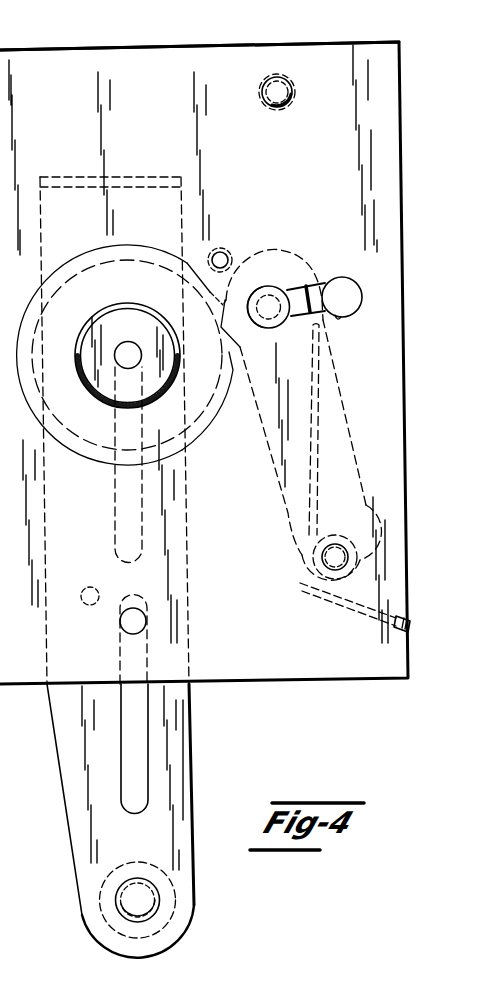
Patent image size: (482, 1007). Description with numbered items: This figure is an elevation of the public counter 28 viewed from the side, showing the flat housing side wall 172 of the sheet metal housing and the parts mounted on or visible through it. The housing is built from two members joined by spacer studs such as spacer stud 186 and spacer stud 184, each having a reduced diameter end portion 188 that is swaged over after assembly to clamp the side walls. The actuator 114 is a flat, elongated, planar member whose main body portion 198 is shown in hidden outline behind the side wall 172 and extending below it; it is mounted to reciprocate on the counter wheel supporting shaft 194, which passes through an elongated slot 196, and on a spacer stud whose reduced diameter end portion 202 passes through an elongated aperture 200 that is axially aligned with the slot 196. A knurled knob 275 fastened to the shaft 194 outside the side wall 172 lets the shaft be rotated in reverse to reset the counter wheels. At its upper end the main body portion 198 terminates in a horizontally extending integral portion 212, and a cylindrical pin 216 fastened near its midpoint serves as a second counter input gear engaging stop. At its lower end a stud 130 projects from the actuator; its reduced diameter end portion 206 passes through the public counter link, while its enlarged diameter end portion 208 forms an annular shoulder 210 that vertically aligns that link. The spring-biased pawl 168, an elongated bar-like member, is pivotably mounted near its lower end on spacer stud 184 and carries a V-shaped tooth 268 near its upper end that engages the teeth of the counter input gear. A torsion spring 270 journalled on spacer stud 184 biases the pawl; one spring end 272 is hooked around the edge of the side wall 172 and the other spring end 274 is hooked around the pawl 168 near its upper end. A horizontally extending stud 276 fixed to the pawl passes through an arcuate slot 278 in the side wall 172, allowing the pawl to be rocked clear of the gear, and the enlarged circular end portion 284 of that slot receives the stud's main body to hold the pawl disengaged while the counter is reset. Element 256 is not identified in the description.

The public counter 28 is at (256, 44).
The housing side wall 172 is at (163, 61).
The reduced diameter end portion 188 is at (268, 97).
The spacer stud 186 is at (275, 105).
The horizontally extending integral portion 212 is at (145, 183).
The hole 256 is at (224, 252).
The V-shaped tooth 268 is at (229, 337).
The knurled knob 275 is at (124, 305).
The counter wheel supporting shaft 194 is at (133, 334).
The elongated slot 196 is at (122, 543).
The cylindrical pin 216 is at (92, 594).
The main body portion 198 is at (190, 603).
The reduced diameter end portion 202 is at (146, 622).
The horizontally extending stud 276 is at (270, 294).
The arcuate slot 278 is at (322, 292).
The enlarged circular end portion 284 is at (342, 317).
The torsion spring end 274 is at (294, 414).
The spring-biased pawl 168 is at (355, 484).
The torsion spring 270 is at (302, 528).
The spacer stud 184 is at (330, 560).
The torsion spring end 272 is at (410, 633).
The actuator 114 is at (194, 742).
The annular shoulder 210 is at (131, 935).
The elongated aperture 200 is at (150, 793).
The stud 130 is at (130, 905).
The reduced diameter end portion 206 is at (160, 900).
The enlarged diameter end portion 208 is at (173, 918).